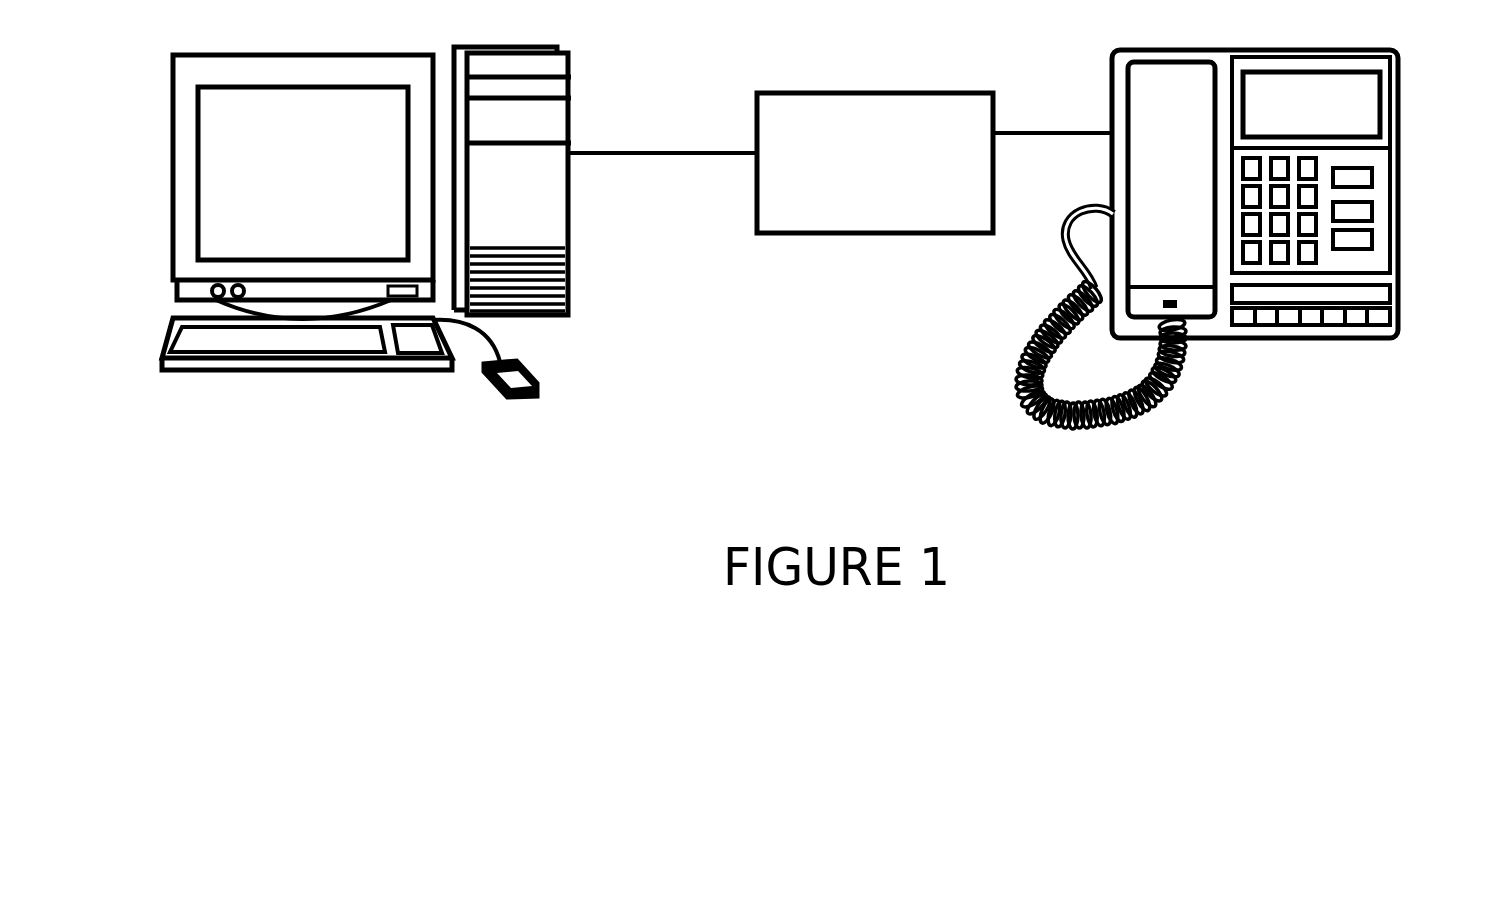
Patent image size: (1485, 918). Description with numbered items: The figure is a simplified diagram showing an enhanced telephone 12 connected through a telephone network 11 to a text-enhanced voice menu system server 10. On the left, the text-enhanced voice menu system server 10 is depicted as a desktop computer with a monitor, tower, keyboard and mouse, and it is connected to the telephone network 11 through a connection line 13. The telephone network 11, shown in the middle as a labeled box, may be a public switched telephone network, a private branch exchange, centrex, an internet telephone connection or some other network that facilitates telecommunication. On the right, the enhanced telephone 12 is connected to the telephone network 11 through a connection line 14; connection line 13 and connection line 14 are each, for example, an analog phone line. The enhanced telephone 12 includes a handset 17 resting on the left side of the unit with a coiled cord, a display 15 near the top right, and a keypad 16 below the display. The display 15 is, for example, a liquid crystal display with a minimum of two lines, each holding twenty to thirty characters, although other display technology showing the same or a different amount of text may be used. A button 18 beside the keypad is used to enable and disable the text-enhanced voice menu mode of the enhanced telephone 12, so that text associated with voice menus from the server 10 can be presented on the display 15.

The text-enhanced voice menu system server 10 is at (568, 318).
The telephone network 11 is at (963, 235).
The enhanced telephone 12 is at (1243, 223).
The connection line 13 is at (657, 157).
The connection line 14 is at (1055, 137).
The display 15 is at (1383, 98).
The keypad 16 is at (1368, 258).
The handset 17 is at (1128, 70).
The button 18 is at (1372, 215).